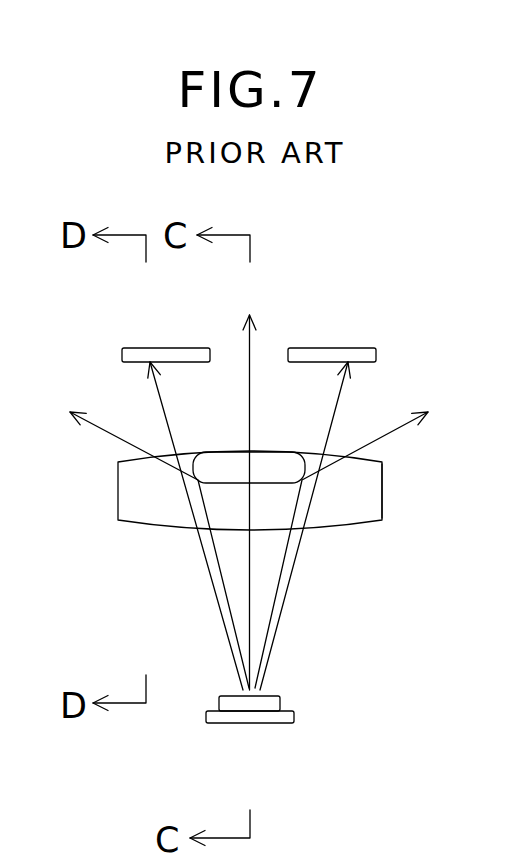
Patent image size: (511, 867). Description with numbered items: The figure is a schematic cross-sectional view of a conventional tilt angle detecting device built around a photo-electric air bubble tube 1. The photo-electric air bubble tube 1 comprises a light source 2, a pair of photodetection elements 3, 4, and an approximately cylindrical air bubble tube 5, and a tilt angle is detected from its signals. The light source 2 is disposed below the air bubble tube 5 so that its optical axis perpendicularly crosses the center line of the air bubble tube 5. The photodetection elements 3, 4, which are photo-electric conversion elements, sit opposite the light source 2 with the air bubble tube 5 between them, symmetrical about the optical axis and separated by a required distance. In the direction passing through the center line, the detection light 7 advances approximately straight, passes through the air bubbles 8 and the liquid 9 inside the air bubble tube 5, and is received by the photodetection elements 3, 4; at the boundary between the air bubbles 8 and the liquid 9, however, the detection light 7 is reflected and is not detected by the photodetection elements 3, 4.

The photo-electric air bubble tube 1 is at (143, 580).
The light source 2 is at (207, 713).
The photodetection element 3 is at (132, 348).
The photodetection element 4 is at (363, 348).
The air bubble tube 5 is at (338, 528).
The detection light 7 is at (270, 643).
The air bubbles 8 is at (223, 472).
The liquid 9 is at (362, 503).